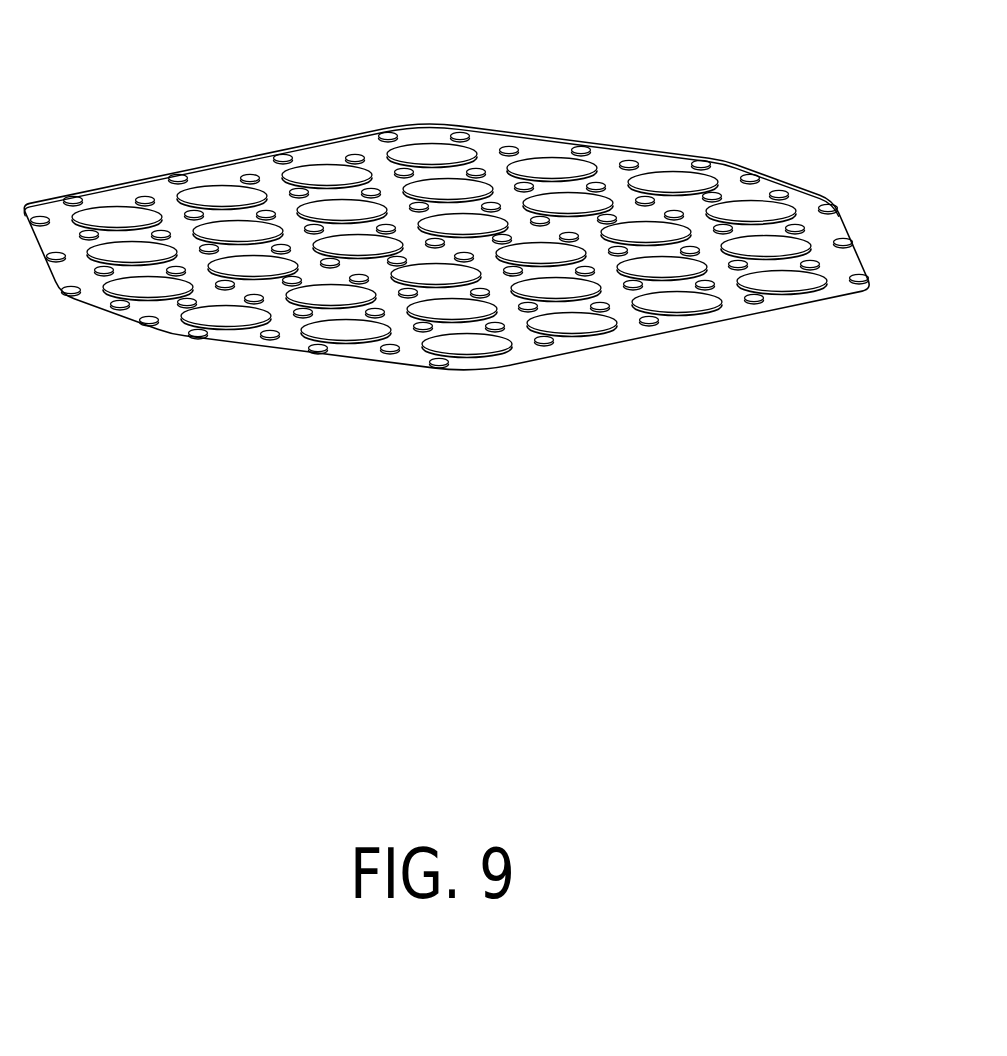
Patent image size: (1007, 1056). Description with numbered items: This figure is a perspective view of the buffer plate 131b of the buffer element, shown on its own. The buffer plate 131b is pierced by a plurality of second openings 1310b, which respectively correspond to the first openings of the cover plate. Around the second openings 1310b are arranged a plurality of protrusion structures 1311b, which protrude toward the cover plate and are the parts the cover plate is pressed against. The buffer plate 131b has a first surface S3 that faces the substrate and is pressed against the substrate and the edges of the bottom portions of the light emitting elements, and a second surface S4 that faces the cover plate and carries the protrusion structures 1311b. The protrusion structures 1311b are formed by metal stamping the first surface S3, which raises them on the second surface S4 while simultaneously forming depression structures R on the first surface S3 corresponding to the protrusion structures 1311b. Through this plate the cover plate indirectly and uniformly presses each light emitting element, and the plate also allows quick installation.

The buffer plate 131b is at (118, 196).
The protrusion structures 1311b is at (582, 142).
The second openings 1310b is at (353, 345).
The depression structures R is at (574, 151).
The first surface S3 is at (694, 340).
The second surface S4 is at (670, 133).